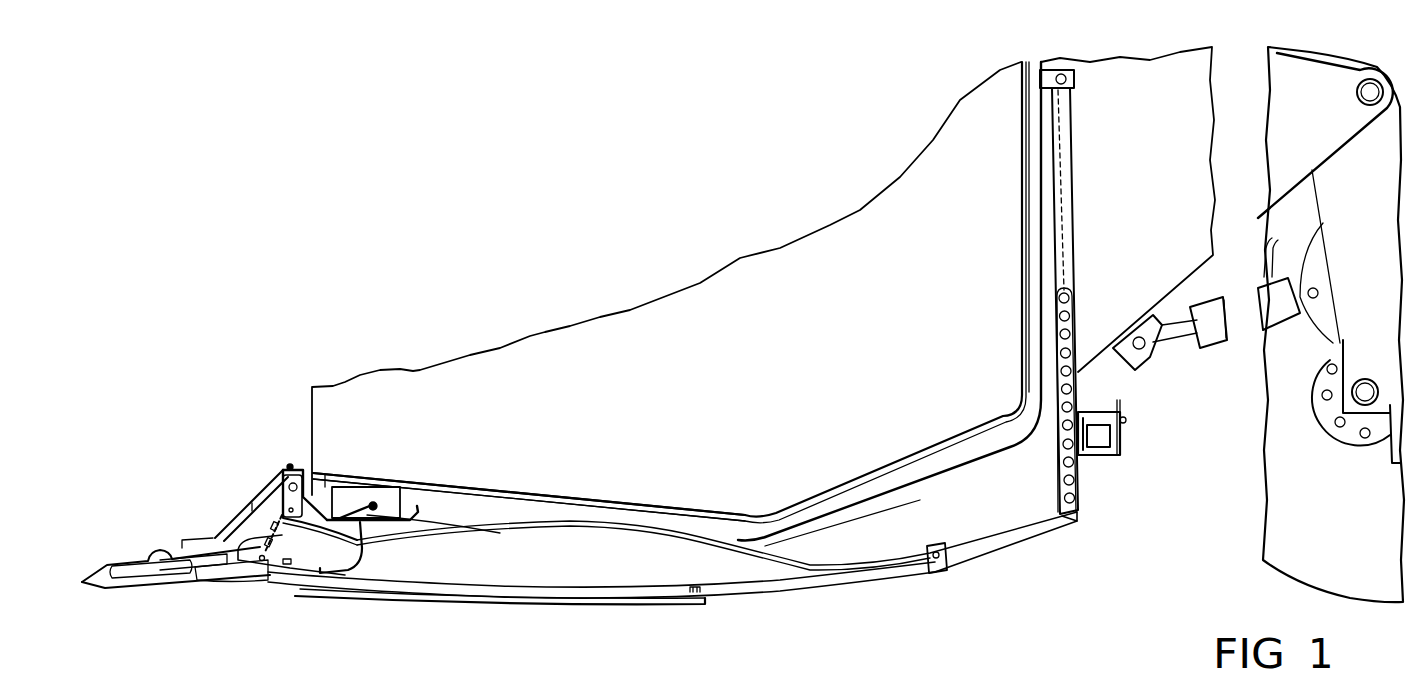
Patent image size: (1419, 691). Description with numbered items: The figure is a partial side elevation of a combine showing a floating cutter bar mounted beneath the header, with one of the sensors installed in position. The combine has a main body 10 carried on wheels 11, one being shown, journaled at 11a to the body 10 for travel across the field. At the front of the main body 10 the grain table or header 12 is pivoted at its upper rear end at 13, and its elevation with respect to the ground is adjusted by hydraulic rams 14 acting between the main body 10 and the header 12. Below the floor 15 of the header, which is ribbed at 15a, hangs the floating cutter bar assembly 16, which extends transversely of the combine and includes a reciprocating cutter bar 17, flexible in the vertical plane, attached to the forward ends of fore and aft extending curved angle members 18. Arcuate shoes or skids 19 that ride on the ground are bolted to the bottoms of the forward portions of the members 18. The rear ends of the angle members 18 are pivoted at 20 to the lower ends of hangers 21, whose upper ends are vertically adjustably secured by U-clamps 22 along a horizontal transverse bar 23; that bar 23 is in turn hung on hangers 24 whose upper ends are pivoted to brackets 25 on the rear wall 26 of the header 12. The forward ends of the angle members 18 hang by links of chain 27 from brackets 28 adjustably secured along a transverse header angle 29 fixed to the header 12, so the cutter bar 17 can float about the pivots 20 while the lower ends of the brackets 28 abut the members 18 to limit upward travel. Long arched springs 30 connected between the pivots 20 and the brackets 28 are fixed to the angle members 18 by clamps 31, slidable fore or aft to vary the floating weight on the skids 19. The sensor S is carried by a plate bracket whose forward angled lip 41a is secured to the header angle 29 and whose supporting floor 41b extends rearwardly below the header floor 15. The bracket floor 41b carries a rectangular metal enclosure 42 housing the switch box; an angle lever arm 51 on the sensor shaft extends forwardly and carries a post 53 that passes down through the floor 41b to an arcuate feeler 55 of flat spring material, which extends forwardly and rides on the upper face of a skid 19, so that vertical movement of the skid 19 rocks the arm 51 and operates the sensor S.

The main body 10 is at (1348, 143).
The wheels 11 is at (1272, 547).
The wheel journal 11a is at (1358, 390).
The header 12 is at (712, 283).
The header pivot 13 is at (1360, 95).
The hydraulic rams 14 is at (1273, 320).
The floor 15 is at (740, 508).
The ribs 15a is at (900, 468).
The floating cutter bar assembly 16 is at (182, 498).
The reciprocating cutter bar 17 is at (130, 565).
The angle members 18 is at (553, 583).
The skids 19 is at (453, 593).
The pivots 20 is at (1078, 509).
The hangers 21 is at (1057, 475).
The U-clamps 22 is at (1100, 457).
The transverse bar 23 is at (1105, 437).
The hangers 24 is at (1070, 263).
The brackets 25 is at (1070, 83).
The rear wall 26 is at (1022, 187).
The chain links 27 is at (273, 532).
The brackets 28 is at (287, 497).
The header angle 29 is at (312, 468).
The arched springs 30 is at (780, 558).
The clamps 31 is at (933, 550).
The angled lip 41a is at (290, 467).
The supporting floor 41b is at (405, 527).
The rectangular metal enclosure 42 is at (345, 493).
The angle lever arm 51 is at (362, 507).
The post 53 is at (357, 542).
The feeler 55 is at (350, 580).
The sensor S is at (397, 480).